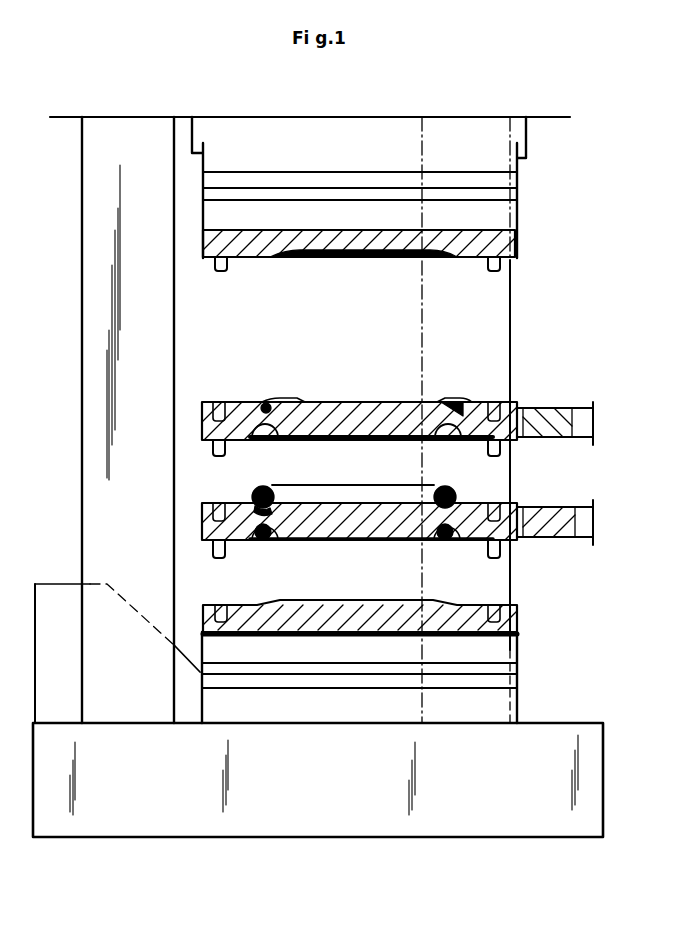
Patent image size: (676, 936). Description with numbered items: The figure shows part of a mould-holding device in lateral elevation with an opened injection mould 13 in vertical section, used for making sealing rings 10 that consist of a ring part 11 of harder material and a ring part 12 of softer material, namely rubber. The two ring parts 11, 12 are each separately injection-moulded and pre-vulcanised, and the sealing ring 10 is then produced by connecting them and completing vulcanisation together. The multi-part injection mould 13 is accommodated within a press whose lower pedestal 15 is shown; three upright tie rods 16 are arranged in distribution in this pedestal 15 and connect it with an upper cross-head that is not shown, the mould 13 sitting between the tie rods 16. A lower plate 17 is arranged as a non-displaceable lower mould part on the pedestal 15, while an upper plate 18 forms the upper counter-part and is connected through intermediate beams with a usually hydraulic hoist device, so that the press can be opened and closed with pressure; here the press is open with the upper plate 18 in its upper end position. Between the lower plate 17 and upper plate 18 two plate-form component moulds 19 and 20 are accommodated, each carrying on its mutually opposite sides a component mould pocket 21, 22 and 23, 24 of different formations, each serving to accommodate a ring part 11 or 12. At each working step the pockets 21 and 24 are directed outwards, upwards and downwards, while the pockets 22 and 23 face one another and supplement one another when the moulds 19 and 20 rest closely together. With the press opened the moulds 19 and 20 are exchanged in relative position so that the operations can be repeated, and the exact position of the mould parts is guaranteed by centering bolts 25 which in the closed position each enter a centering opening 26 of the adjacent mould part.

The sealing ring 10 is at (246, 493).
The ring part of harder material 11 is at (262, 405).
The ring part of softer material 12 is at (275, 463).
The injection mould 13 is at (540, 205).
The lower pedestal 15 is at (493, 825).
The tie rods 16 is at (103, 283).
The lower plate 17 is at (500, 622).
The upper plate 18 is at (505, 243).
The component mould 19 is at (357, 403).
The component mould 20 is at (373, 520).
The component mould pocket 21 is at (282, 405).
The component mould pocket 22 is at (259, 492).
The component mould pocket 23 is at (270, 505).
The component mould pocket 24 is at (300, 540).
The centering bolts 25 is at (497, 268).
The centering opening 26 is at (494, 408).